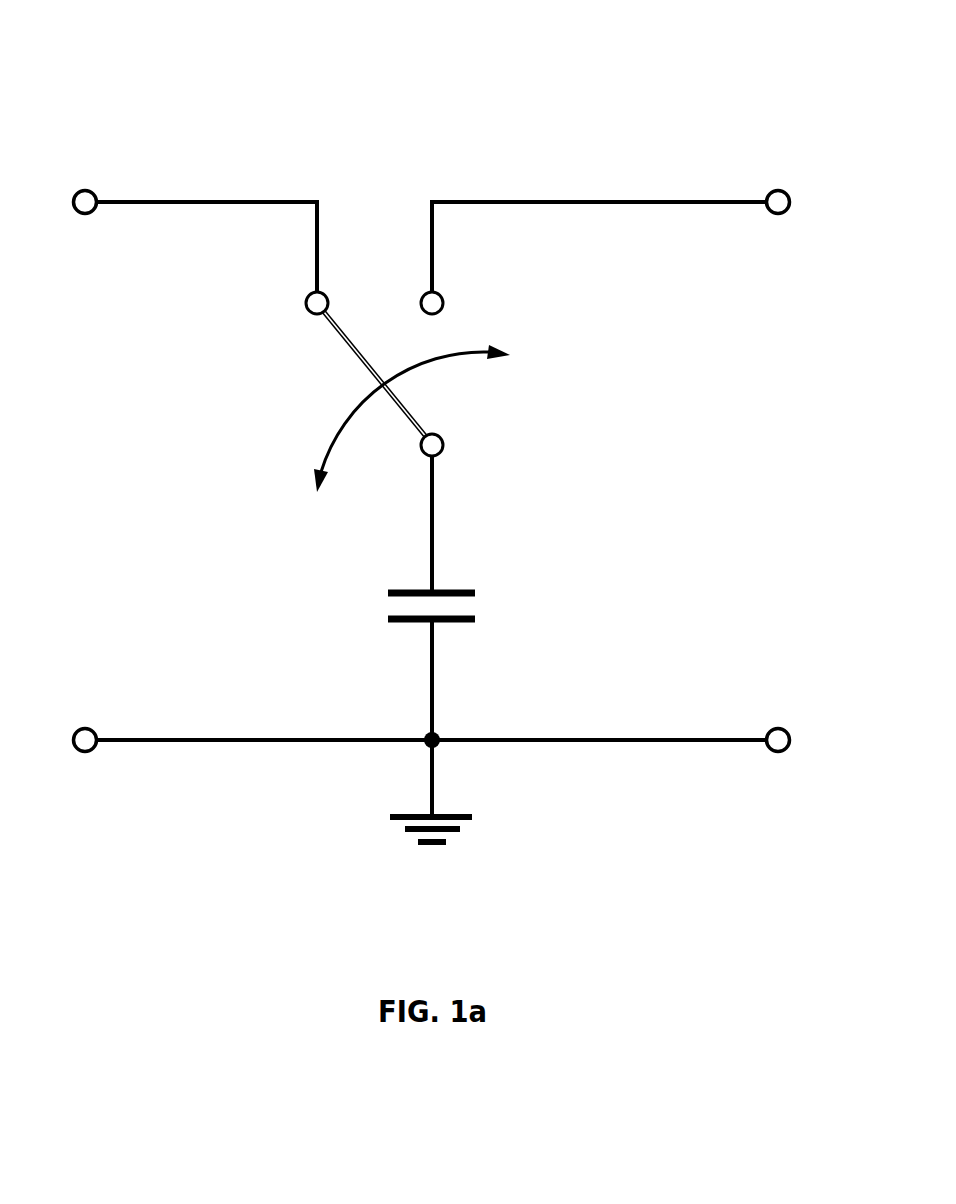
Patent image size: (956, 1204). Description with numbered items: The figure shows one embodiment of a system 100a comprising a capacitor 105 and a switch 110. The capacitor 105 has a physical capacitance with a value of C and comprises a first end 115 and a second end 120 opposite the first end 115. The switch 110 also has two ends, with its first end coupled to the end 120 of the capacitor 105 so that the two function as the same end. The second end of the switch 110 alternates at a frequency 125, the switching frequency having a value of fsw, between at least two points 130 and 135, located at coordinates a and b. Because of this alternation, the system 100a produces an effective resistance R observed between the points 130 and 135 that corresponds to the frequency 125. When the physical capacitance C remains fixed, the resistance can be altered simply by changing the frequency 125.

The system 100a is at (433, 92).
The capacitor 105 is at (455, 590).
The switch 110 is at (376, 372).
The first end 115 is at (437, 732).
The second end 120 is at (425, 458).
The frequency 125 is at (489, 343).
The point 130 is at (326, 292).
The point 135 is at (440, 292).